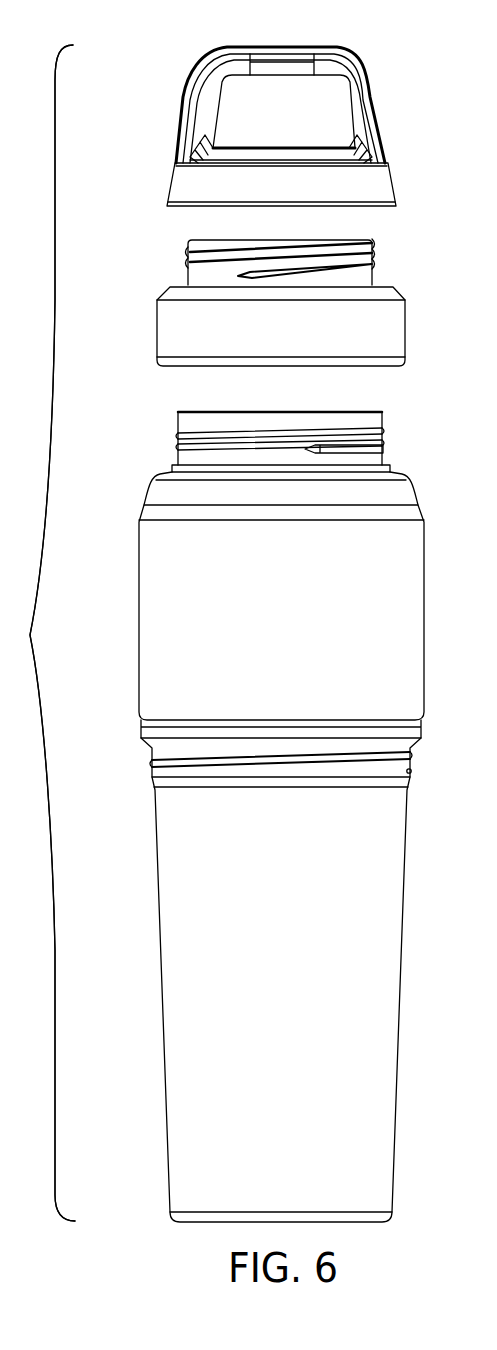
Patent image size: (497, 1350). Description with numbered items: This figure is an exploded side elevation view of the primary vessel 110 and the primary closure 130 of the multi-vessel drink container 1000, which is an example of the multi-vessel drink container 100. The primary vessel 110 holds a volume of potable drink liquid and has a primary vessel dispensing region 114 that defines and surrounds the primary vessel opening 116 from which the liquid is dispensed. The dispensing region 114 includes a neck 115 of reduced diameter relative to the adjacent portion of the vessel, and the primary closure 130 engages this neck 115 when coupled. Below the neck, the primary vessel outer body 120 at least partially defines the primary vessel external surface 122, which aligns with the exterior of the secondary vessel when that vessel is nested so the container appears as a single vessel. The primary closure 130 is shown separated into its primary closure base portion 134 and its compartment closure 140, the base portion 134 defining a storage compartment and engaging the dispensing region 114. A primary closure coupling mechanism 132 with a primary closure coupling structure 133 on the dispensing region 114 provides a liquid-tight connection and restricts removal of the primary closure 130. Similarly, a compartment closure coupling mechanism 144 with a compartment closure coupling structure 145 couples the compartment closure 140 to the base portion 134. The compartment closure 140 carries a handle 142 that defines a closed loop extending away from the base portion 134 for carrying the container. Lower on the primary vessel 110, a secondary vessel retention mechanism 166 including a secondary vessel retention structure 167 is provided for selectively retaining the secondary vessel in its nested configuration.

The multi-vessel drink container 100 is at (181, 55).
The multi-vessel drink container 1000 is at (178, 90).
The primary vessel 110 is at (265, 547).
The primary vessel dispensing region 114 is at (272, 438).
The neck 115 is at (178, 454).
The primary vessel opening 116 is at (192, 413).
The primary vessel outer body 120 is at (269, 960).
The primary vessel external surface 122 is at (133, 720).
The primary closure 130 is at (271, 121).
The primary closure coupling mechanism 132 is at (392, 432).
The primary closure coupling structure 133 is at (392, 446).
The primary closure base portion 134 is at (323, 287).
The compartment closure 140 is at (170, 160).
The handle 142 is at (350, 57).
The compartment closure coupling mechanism 144 is at (385, 258).
The compartment closure coupling structure 145 is at (380, 268).
The secondary vessel retention mechanism 166 is at (414, 771).
The secondary vessel retention structure 167 is at (411, 757).